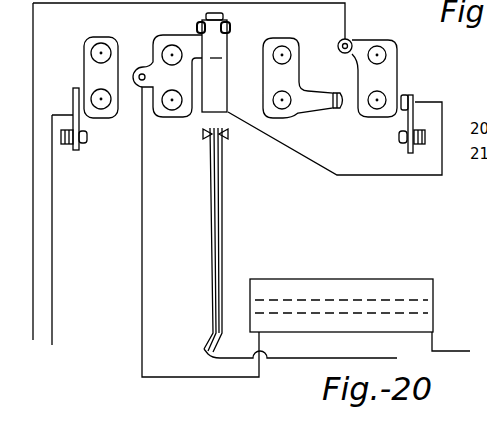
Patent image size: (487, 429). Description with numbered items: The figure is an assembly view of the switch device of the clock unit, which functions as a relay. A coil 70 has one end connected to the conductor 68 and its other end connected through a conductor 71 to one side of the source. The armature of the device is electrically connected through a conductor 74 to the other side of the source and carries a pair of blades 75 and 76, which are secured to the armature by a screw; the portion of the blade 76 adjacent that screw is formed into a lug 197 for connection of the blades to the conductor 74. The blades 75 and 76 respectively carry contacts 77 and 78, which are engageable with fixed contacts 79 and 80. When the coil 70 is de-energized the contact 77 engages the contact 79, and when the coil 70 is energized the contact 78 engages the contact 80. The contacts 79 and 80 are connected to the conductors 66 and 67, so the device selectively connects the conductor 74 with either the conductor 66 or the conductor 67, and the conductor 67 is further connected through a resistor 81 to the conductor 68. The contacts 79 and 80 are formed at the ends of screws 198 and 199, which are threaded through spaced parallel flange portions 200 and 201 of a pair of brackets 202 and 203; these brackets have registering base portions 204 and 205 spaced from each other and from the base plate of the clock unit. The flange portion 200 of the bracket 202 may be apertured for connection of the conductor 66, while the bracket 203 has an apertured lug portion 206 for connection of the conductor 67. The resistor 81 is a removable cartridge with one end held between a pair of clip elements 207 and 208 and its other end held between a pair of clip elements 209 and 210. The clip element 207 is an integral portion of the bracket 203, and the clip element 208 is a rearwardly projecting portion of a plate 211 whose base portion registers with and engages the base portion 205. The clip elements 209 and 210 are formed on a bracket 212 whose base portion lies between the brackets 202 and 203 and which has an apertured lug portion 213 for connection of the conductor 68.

The conductor 66 is at (52, 329).
The conductor 67 is at (33, 338).
The conductor 68 is at (142, 208).
The coil 70 is at (398, 281).
The conductor 71 is at (443, 352).
The conductor 74 is at (357, 358).
The blade 75 is at (211, 197).
The blade 76 is at (223, 192).
The contact 77 is at (205, 138).
The contact 78 is at (227, 138).
The fixed contact 79 is at (86, 138).
The fixed contact 80 is at (402, 141).
The resistor 81 is at (220, 83).
The lug 197 is at (205, 350).
The screw 198 is at (69, 146).
The screw 199 is at (431, 143).
The flange portion 200 is at (78, 126).
The flange portion 201 is at (403, 134).
The bracket 202 is at (86, 109).
The bracket 203 is at (414, 107).
The base portion 204 is at (84, 72).
The base portion 205 is at (398, 72).
The lug portion 206 is at (343, 52).
The clip element 207 is at (420, 88).
The clip element 208 is at (338, 110).
The clip element 209 is at (198, 24).
The clip element 210 is at (231, 24).
The plate 211 is at (290, 43).
The bracket 212 is at (170, 36).
The lug portion 213 is at (142, 73).